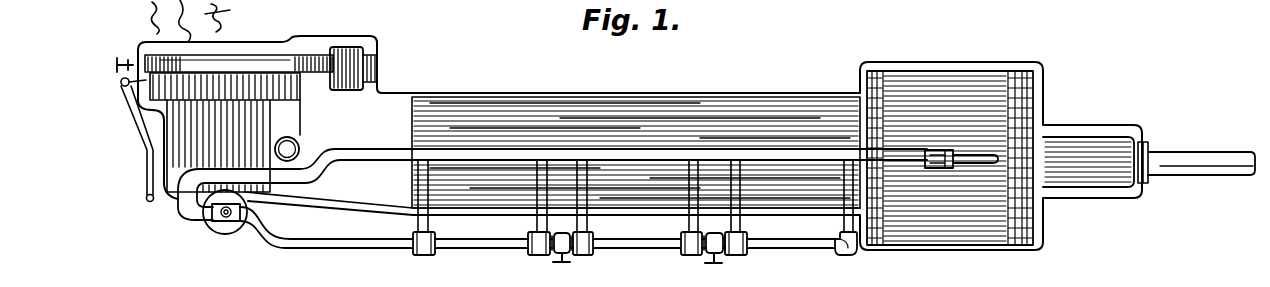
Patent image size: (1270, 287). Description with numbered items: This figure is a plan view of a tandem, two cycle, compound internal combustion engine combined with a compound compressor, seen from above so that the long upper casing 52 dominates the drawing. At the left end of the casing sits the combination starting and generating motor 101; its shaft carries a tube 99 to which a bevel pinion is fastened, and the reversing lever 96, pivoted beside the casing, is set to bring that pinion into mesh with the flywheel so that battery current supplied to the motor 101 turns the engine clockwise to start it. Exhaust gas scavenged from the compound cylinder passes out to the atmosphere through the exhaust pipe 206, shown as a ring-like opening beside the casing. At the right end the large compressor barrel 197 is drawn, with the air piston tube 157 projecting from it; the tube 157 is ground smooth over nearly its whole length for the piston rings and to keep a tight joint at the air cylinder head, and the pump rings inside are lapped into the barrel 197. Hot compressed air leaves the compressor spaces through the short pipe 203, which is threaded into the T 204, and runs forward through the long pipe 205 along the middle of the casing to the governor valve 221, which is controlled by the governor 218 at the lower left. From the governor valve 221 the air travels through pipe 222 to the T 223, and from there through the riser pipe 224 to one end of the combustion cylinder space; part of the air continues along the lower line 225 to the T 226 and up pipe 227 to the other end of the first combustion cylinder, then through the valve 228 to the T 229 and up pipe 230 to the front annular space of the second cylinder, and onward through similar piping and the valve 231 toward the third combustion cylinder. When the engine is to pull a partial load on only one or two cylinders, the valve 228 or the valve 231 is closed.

The upper casing 52 is at (636, 152).
The reversing lever 96 is at (148, 163).
The tube 99 is at (125, 55).
The motor 101 is at (346, 48).
The air piston tube 157 is at (1210, 143).
The barrel 197 is at (1075, 190).
The pipe 203 is at (982, 158).
The T 204 is at (957, 148).
The pipe 205 is at (399, 147).
The exhaust pipe 206 is at (294, 141).
The governor 218 is at (228, 230).
The governor valve 221 is at (233, 223).
The pipe 222 is at (322, 240).
The T 223 is at (413, 250).
The pipe 224 is at (428, 223).
The pipe section 225 is at (473, 250).
The T 226 is at (552, 255).
The pipe 227 is at (540, 223).
The valve 228 is at (552, 265).
The T 229 is at (582, 252).
The pipe 230 is at (588, 225).
The valve 231 is at (707, 263).